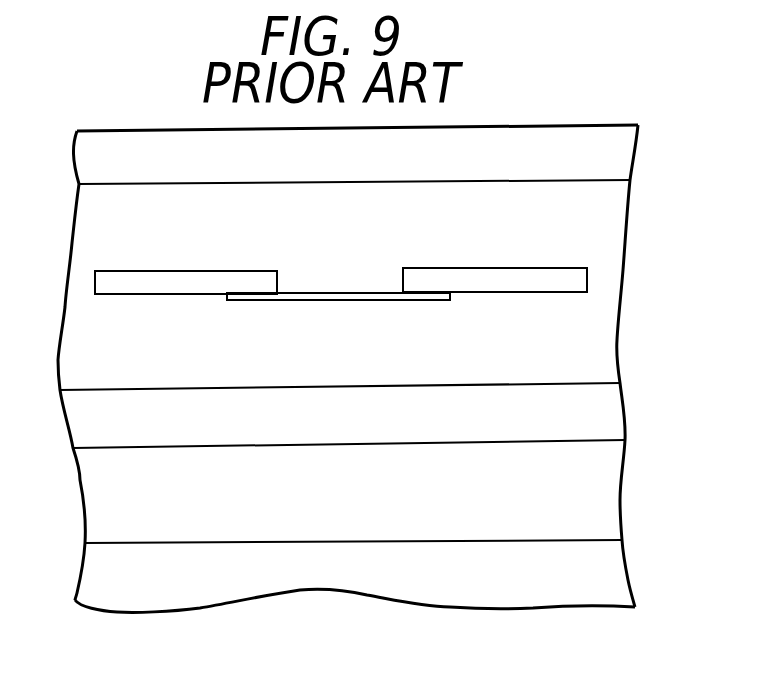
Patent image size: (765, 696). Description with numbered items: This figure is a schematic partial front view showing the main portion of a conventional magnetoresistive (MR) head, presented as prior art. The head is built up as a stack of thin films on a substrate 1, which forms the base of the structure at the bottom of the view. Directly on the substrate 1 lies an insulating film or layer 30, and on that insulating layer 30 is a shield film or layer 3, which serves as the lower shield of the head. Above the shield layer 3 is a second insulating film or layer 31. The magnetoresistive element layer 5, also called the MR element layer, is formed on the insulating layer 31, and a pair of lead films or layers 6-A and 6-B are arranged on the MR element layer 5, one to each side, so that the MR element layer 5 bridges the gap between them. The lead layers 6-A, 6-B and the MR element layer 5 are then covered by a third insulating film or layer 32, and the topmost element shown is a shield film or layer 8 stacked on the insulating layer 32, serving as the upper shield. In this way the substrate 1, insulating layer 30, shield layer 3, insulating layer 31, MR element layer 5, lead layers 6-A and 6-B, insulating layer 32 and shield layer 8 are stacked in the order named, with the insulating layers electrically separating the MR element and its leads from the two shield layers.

The substrate 1 is at (605, 578).
The insulating film or layer 30 is at (597, 498).
The shield film or layer 3 is at (600, 416).
The insulating film or layer 31 is at (595, 341).
The magnetoresistive element layer 5 is at (302, 301).
The lead film or layer 6-A is at (587, 278).
The lead film or layer 6-B is at (170, 271).
The insulating film or layer 32 is at (600, 226).
The shield film or layer 8 is at (620, 156).